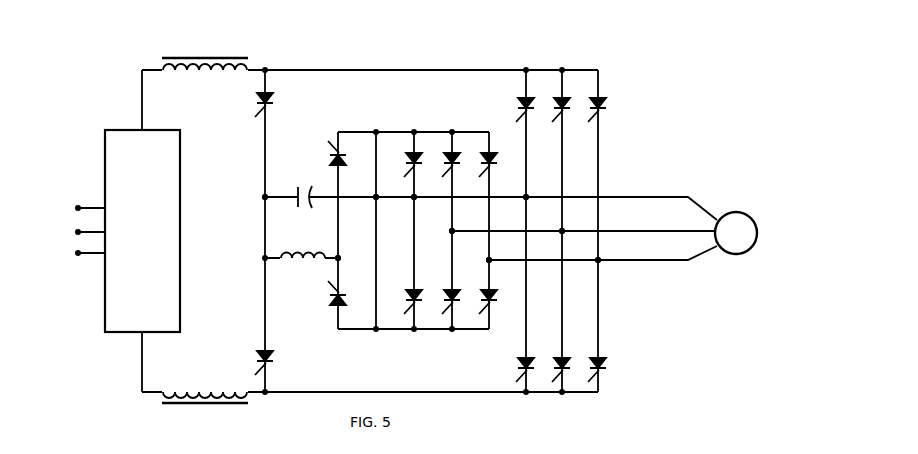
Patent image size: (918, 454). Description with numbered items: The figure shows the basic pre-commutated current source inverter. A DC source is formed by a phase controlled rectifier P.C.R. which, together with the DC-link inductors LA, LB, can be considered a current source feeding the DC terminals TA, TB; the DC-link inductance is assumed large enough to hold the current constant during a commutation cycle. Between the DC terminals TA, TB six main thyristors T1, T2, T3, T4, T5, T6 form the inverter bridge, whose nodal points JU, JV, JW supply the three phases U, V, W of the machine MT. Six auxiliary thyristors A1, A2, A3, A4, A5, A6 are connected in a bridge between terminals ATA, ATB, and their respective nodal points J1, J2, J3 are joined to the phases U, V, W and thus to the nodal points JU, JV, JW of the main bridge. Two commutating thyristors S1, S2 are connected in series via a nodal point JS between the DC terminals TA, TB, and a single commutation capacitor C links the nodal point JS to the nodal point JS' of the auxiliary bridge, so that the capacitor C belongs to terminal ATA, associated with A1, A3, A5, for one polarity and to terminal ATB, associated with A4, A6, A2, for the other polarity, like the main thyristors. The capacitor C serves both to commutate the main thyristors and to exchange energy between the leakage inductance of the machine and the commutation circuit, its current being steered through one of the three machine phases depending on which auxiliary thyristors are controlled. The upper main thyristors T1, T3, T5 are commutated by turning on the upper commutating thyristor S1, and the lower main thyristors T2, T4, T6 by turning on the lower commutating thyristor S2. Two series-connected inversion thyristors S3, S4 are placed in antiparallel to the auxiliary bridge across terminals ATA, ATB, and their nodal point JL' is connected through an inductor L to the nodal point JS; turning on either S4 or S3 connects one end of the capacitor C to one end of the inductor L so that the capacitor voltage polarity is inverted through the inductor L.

The phase controlled rectifier P.C.R. is at (142, 231).
The DC-link inductor LA is at (216, 78).
The DC-link inductor LB is at (212, 382).
The DC terminal TA is at (356, 67).
The DC terminal TB is at (312, 395).
The commutating thyristor S1 is at (274, 103).
The commutating thyristor S2 is at (274, 361).
The inversion thyristor S3 is at (332, 301).
The inversion thyristor S4 is at (328, 160).
The commutation capacitor C is at (299, 184).
The inductor L is at (307, 248).
The terminal of auxiliary thyristor bridge ATA is at (397, 128).
The terminal of auxiliary thyristor bridge ATB is at (396, 334).
The auxiliary thyristor A1 is at (406, 163).
The auxiliary thyristor A2 is at (497, 300).
The auxiliary thyristor A3 is at (460, 163).
The auxiliary thyristor A4 is at (406, 299).
The auxiliary thyristor A5 is at (497, 163).
The auxiliary thyristor A6 is at (444, 293).
The main thyristor T1 is at (517, 104).
The main thyristor T2 is at (607, 367).
The main thyristor T3 is at (570, 107).
The main thyristor T4 is at (516, 368).
The main thyristor T5 is at (607, 106).
The main thyristor T6 is at (570, 358).
The nodal point JS is at (250, 200).
The nodal point JS' is at (363, 205).
The nodal point J1 is at (412, 198).
The nodal point J2 is at (450, 232).
The nodal point J3 is at (487, 260).
The nodal point JL' is at (351, 257).
The nodal point JU is at (528, 194).
The nodal point JV is at (565, 228).
The nodal point JW is at (601, 257).
The machine phase U is at (674, 195).
The machine phase V is at (675, 229).
The machine phase W is at (676, 260).
The machine MT is at (736, 233).